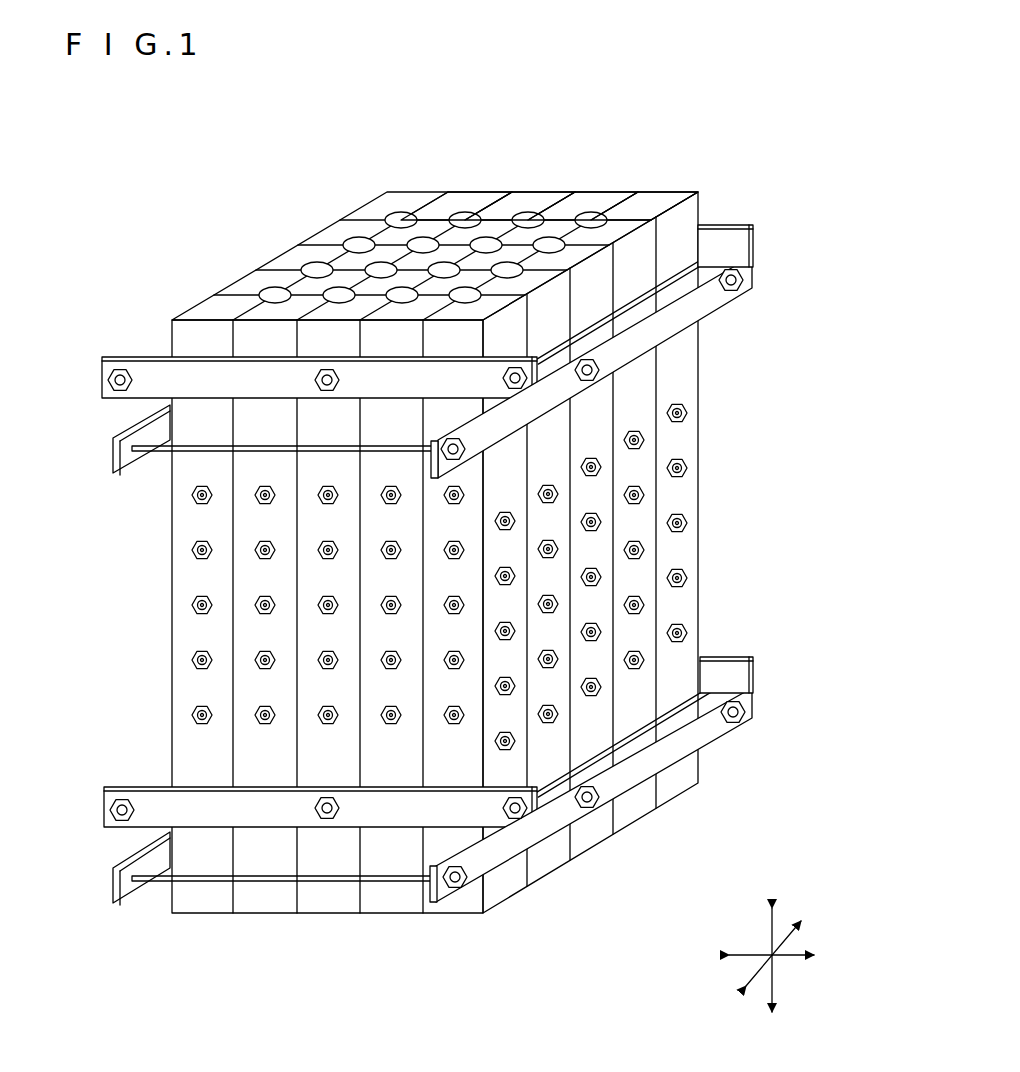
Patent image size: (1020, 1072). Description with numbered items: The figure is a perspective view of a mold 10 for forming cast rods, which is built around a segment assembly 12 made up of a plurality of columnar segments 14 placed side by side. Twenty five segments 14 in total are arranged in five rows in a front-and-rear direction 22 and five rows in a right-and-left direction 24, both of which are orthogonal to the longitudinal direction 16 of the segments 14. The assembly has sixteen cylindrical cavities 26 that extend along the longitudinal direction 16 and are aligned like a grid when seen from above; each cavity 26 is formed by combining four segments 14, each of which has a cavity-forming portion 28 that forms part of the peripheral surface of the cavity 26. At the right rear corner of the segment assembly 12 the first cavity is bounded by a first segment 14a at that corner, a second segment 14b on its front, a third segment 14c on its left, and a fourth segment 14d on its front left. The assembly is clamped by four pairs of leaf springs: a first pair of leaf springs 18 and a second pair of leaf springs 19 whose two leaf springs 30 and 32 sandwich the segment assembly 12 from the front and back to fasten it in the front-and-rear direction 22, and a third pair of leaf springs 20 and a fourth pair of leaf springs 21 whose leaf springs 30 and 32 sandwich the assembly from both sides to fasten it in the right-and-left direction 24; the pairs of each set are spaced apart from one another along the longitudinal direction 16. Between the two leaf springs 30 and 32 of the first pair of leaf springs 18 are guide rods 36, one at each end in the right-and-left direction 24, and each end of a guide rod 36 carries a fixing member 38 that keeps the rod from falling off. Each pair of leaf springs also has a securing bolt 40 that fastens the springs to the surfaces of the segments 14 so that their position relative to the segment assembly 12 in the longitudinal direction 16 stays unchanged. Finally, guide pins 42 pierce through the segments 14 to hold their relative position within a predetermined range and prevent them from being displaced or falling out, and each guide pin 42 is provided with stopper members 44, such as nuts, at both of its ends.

The mold for forming cast rods 10 is at (649, 94).
The segment assembly 12 is at (706, 369).
The columnar segments 14 is at (465, 200).
The first segment 14a is at (660, 202).
The second segment 14b is at (632, 194).
The third segment 14c is at (580, 200).
The fourth segment 14d is at (540, 200).
The longitudinal direction 16 is at (752, 947).
The first pair of leaf springs 18 is at (700, 131).
The second pair of leaf springs 19 is at (800, 583).
The third pair of leaf springs 20 is at (165, 540).
The fourth pair of leaf springs 21 is at (140, 995).
The front-and-rear direction 22 is at (758, 978).
The right-and-left direction 24 is at (790, 960).
The cavities 26 is at (361, 238).
The cavity-forming portion 28 is at (316, 268).
The leaf spring 30 is at (114, 474).
The leaf spring 32 is at (426, 456).
The guide rods 36 is at (200, 446).
The fixing member 38 is at (120, 368).
The securing bolt 40 is at (318, 376).
The guide pins 42 is at (192, 604).
The stopper members 44 is at (196, 612).